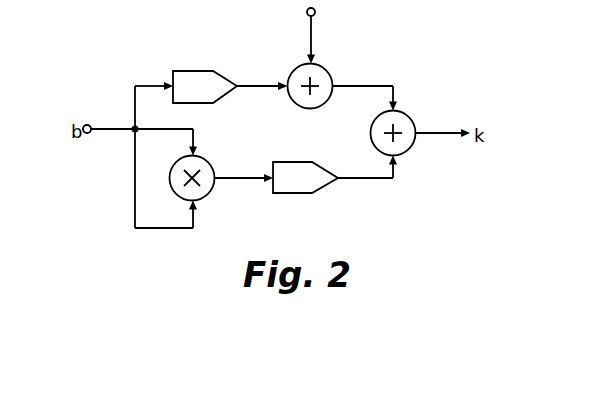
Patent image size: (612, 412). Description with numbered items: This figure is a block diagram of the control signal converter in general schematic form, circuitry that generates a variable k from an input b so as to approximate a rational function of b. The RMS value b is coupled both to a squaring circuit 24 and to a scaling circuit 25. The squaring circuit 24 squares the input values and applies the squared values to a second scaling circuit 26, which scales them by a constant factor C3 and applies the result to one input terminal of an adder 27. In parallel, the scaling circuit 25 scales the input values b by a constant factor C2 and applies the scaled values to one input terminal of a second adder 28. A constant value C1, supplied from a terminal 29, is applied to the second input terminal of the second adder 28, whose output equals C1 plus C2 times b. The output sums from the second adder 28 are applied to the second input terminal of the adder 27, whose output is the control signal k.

The squaring circuit 24 is at (209, 191).
The scaling circuit 25 is at (202, 71).
The second scaling circuit 26 is at (331, 186).
The adder 27 is at (409, 148).
The second adder 28 is at (328, 78).
The terminal 29 is at (315, 13).